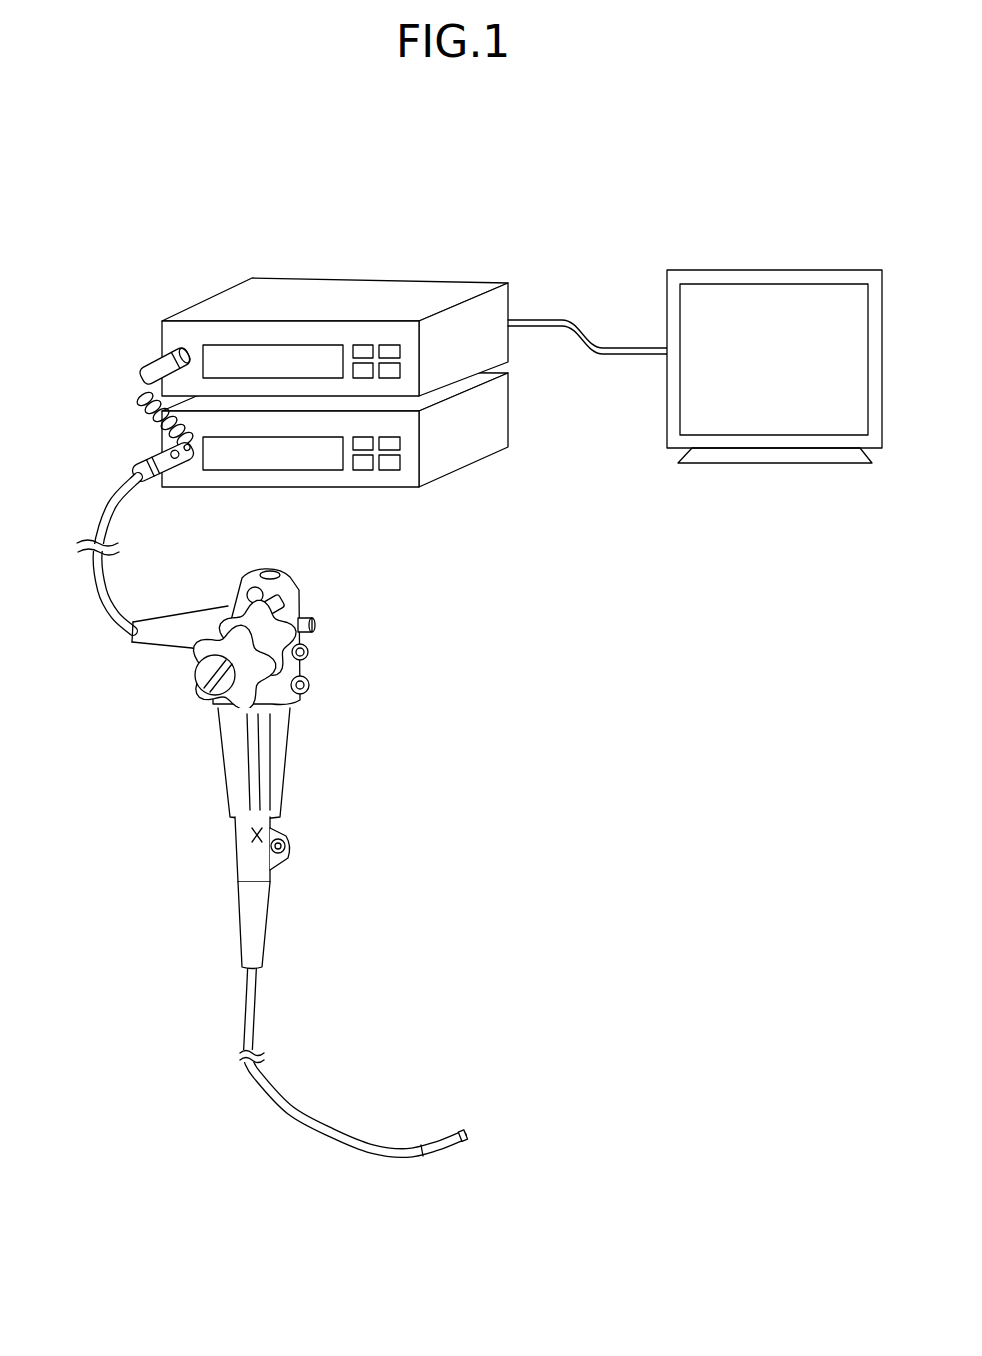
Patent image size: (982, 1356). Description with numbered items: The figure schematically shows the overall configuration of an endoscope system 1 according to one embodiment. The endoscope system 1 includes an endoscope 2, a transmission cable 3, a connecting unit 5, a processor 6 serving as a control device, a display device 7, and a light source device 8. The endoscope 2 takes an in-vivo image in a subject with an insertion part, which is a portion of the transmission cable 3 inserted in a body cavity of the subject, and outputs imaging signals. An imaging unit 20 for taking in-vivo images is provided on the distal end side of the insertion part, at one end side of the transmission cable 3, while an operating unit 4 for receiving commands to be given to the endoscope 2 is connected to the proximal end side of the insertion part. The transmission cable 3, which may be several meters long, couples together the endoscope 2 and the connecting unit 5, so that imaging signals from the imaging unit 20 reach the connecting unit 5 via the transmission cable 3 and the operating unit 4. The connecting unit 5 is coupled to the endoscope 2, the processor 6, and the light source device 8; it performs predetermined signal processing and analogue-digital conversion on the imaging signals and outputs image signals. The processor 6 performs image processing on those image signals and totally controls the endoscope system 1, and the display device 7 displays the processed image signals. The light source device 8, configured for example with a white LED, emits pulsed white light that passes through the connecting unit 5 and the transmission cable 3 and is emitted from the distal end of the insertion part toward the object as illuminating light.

The endoscope system 1 is at (815, 194).
The endoscope 2 is at (401, 712).
The transmission cable 3 is at (92, 578).
The operating unit 4 is at (308, 668).
The connecting unit 5 is at (160, 447).
The processor 6 is at (475, 285).
The display device 7 is at (773, 277).
The light source device 8 is at (498, 412).
The imaging unit 20 is at (463, 1148).